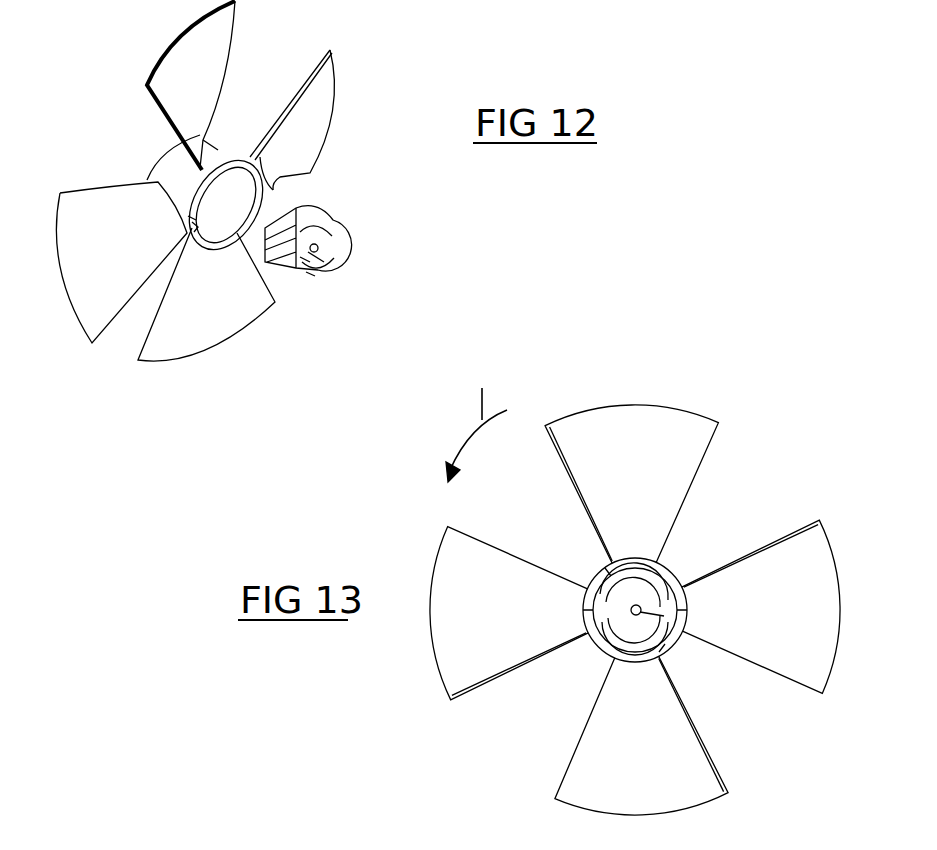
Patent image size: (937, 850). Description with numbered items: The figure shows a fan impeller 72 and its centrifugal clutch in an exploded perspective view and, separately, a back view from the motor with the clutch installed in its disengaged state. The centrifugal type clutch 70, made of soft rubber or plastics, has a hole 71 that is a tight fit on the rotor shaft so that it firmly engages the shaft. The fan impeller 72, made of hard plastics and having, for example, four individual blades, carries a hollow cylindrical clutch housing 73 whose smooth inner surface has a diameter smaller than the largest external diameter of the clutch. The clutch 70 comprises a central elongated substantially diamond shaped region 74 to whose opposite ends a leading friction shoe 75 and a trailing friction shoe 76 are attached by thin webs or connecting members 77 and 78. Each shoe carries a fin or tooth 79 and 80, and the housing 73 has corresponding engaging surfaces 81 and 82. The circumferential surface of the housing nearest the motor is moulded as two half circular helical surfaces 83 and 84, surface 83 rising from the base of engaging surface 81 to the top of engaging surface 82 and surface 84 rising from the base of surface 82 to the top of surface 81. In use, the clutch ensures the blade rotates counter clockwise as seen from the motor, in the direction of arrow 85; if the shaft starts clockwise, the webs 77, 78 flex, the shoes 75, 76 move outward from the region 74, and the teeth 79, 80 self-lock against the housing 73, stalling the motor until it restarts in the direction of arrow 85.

In FIG. 12, the centrifugal type clutch 70 is at (339, 225).
In FIG. 12, the hole 71 is at (327, 257).
In FIG. 13, the hole 71 is at (680, 657).
In FIG. 12, the fan impeller 72 is at (225, 53).
In FIG. 13, the fan impeller 72 is at (713, 420).
In FIG. 12, the clutch housing 73 is at (210, 147).
In FIG. 13, the clutch housing 73 is at (680, 553).
In FIG. 12, the central diamond shaped region 74 is at (300, 257).
In FIG. 13, the central diamond shaped region 74 is at (612, 565).
In FIG. 12, the leading friction shoe 75 is at (310, 273).
In FIG. 13, the leading friction shoe 75 is at (620, 648).
In FIG. 12, the trailing friction shoe 76 is at (317, 223).
In FIG. 13, the trailing friction shoe 76 is at (680, 583).
In FIG. 13, the connecting member 77 is at (592, 580).
In FIG. 13, the connecting member 78 is at (680, 633).
In FIG. 13, the tooth 79 is at (653, 562).
In FIG. 13, the tooth 80 is at (633, 667).
In FIG. 12, the engaging surface 81 is at (195, 227).
In FIG. 12, the engaging surface 82 is at (297, 177).
In FIG. 12, the half circular helical surface 83 is at (197, 197).
In FIG. 12, the half circular helical surface 84 is at (222, 247).
In FIG. 13, the arrow 85 is at (476, 420).